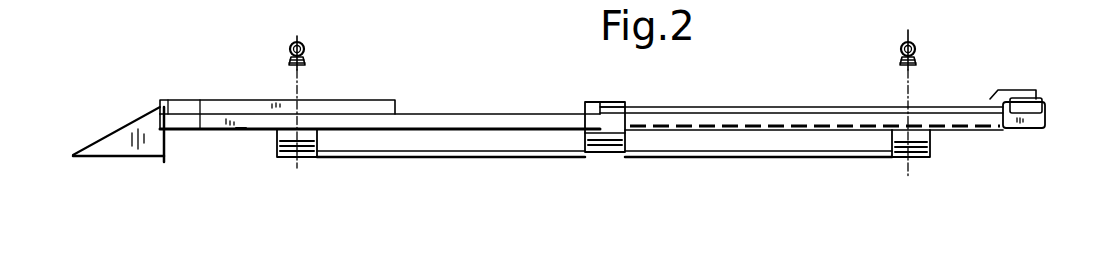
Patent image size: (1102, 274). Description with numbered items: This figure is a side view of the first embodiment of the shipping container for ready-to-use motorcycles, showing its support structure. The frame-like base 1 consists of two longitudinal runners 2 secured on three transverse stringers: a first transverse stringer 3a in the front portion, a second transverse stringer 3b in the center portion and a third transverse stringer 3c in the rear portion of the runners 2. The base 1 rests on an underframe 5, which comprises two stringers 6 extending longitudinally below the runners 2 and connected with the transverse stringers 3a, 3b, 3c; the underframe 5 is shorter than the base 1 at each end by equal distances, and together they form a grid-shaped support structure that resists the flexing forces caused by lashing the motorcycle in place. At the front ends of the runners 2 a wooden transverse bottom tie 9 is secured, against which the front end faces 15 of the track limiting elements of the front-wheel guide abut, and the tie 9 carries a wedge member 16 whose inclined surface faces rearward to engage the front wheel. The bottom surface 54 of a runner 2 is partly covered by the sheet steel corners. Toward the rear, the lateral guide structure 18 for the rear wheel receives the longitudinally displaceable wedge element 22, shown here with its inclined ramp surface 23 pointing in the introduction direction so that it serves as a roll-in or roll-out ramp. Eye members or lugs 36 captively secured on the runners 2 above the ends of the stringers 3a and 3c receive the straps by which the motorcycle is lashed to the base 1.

The frame-like base 1 is at (541, 124).
The longitudinal runners 2 is at (490, 121).
The first transverse stringer 3a is at (932, 135).
The second transverse stringer 3b is at (627, 153).
The third transverse stringer 3c is at (315, 157).
The underframe 5 is at (785, 147).
The longitudinal stringers 6 is at (473, 153).
The transverse bottom tie 9 is at (1047, 107).
The front end faces 15 is at (1022, 128).
The wedge member 16 is at (1017, 96).
The lateral guide structure 18 is at (243, 106).
The wedge element 22 is at (164, 162).
The ramp surface 23 is at (100, 147).
The eye members or lugs 36 is at (307, 46).
The bottom surface 54 is at (240, 130).